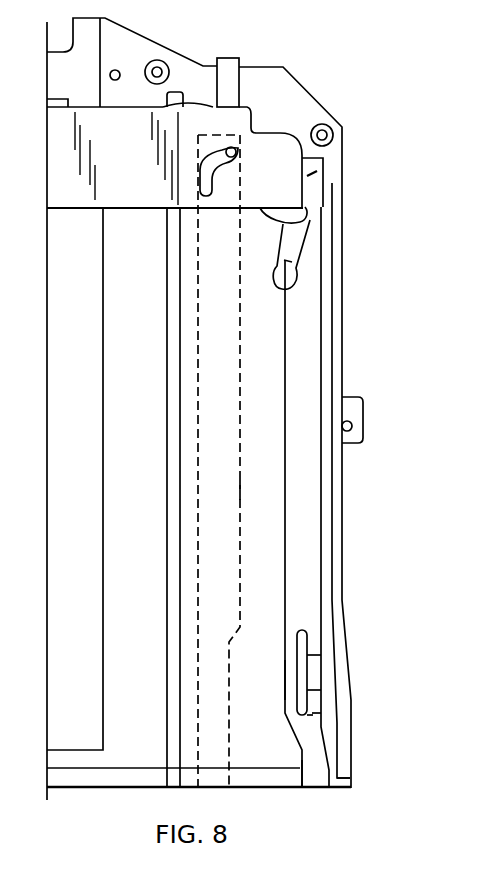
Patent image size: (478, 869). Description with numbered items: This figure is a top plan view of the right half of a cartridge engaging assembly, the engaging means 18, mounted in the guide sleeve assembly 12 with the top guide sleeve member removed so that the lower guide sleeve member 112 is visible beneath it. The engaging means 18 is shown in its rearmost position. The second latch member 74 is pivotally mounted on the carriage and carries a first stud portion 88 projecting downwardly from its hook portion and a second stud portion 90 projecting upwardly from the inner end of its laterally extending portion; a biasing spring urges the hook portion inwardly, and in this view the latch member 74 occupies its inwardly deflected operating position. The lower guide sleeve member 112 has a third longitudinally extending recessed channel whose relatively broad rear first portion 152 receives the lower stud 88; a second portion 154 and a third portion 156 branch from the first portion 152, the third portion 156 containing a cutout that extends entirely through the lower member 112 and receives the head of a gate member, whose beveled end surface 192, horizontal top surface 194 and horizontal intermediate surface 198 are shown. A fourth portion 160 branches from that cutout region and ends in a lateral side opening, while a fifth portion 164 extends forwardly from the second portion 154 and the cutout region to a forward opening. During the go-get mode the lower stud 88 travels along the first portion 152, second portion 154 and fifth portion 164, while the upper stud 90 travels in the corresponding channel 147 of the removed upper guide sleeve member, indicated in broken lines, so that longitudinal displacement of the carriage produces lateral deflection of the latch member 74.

The guide sleeve assembly 12 is at (350, 324).
The engaging means 18 is at (146, 187).
The second latch member 74 is at (290, 217).
The first stud portion 88 is at (318, 248).
The second stud portion 90 is at (247, 137).
The lower guide sleeve member 112 is at (252, 358).
The channel 147 is at (238, 490).
The first portion of third channel 152 is at (302, 480).
The second portion of third channel 154 is at (290, 678).
The third portion of third channel 156 is at (310, 638).
The fourth portion of third channel 160 is at (343, 730).
The fifth portion of third channel 164 is at (313, 753).
The beveled end surface 192 is at (308, 710).
The horizontal top surface 194 is at (305, 683).
The horizontal intermediate surface 198 is at (315, 660).